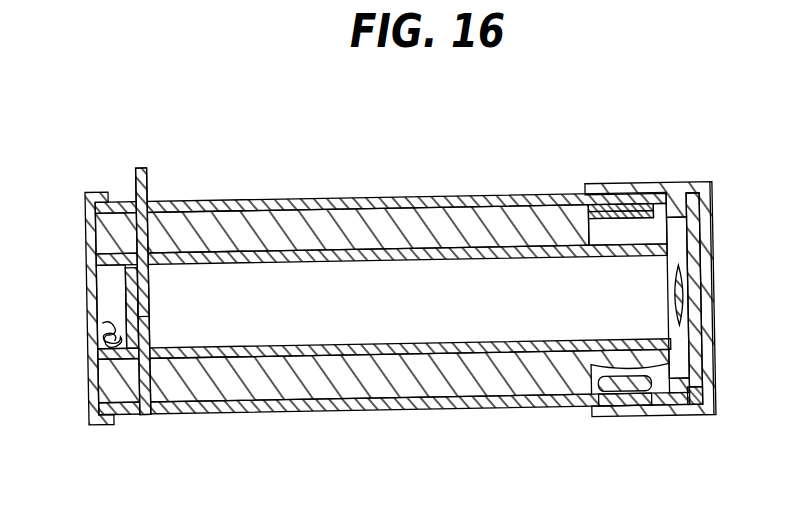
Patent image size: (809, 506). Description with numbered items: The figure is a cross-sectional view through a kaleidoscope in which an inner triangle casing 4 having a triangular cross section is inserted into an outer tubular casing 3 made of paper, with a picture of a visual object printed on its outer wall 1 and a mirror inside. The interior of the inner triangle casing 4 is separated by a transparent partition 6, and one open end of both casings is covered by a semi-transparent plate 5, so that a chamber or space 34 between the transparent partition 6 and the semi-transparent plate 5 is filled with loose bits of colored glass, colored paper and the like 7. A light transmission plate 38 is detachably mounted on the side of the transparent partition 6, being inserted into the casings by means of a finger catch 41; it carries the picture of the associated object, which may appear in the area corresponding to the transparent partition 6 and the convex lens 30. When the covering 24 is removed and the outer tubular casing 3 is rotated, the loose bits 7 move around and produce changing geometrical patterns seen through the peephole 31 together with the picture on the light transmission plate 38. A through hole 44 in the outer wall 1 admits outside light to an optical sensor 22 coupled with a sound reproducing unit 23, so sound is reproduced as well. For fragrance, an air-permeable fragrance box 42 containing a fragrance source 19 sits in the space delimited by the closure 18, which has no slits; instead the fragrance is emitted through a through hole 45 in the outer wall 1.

The outer wall 1 is at (487, 193).
The outer tubular casing 3 is at (392, 413).
The inner triangle casing 4 is at (330, 248).
The semi-transparent plate 5 is at (95, 223).
The transparent partition 6 is at (133, 307).
The loose bits of colored glass, colored paper and the like 7 is at (97, 354).
The closure 18 is at (703, 257).
The fragrance source 19 is at (633, 400).
The optical sensor 22 is at (655, 196).
The sound reproducing unit 23 is at (612, 208).
The covering 24 is at (710, 228).
The convex lens 30 is at (685, 291).
The peephole 31 is at (690, 311).
The chamber or space 34 is at (110, 297).
The light transmission plate 38 is at (152, 308).
The finger catch 41 is at (145, 178).
The air-permeable fragrance box 42 is at (694, 396).
The through hole 44 is at (640, 201).
The through hole 45 is at (612, 401).